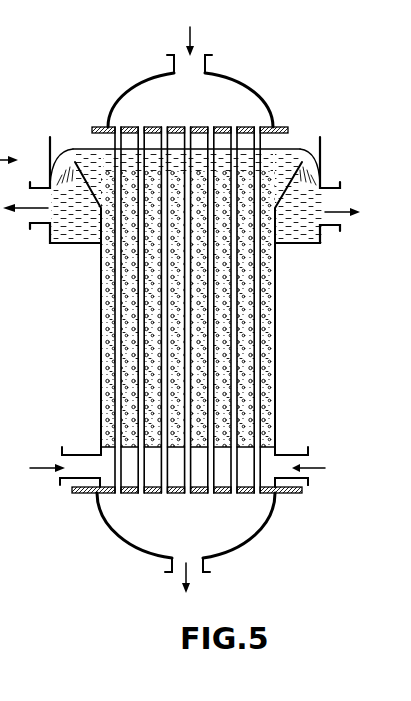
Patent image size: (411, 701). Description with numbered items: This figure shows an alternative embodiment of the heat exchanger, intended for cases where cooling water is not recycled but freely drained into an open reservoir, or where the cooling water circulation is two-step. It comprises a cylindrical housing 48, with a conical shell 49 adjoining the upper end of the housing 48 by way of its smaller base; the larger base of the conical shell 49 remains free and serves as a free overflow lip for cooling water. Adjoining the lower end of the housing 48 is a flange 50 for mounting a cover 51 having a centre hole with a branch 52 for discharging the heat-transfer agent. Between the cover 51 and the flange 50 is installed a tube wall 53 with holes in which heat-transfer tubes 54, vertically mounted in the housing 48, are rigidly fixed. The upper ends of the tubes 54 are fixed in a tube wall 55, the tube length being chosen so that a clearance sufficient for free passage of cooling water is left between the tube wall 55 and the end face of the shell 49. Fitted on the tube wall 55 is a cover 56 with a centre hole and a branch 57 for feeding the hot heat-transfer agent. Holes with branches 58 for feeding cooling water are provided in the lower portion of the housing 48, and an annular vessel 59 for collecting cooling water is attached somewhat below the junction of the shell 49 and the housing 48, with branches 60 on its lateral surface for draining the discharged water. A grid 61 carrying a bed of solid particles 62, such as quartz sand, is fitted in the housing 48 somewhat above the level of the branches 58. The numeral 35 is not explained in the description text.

The feed flow arrow 35 is at (0, 128).
The cylindrical housing 48 is at (271, 392).
The conical shell 49 is at (186, 196).
The flange 50 is at (298, 486).
The cover 51 is at (113, 525).
The branch 52 is at (168, 572).
The tube wall 53 is at (243, 494).
The heat-transfer tubes 54 is at (116, 352).
The tube wall 55 is at (248, 127).
The cover 56 is at (133, 87).
The branch 57 is at (213, 55).
The branches 58 is at (74, 453).
The annular vessel 59 is at (322, 233).
The branches 60 is at (34, 229).
The grid 61 is at (273, 432).
The solid particles 62 is at (273, 412).